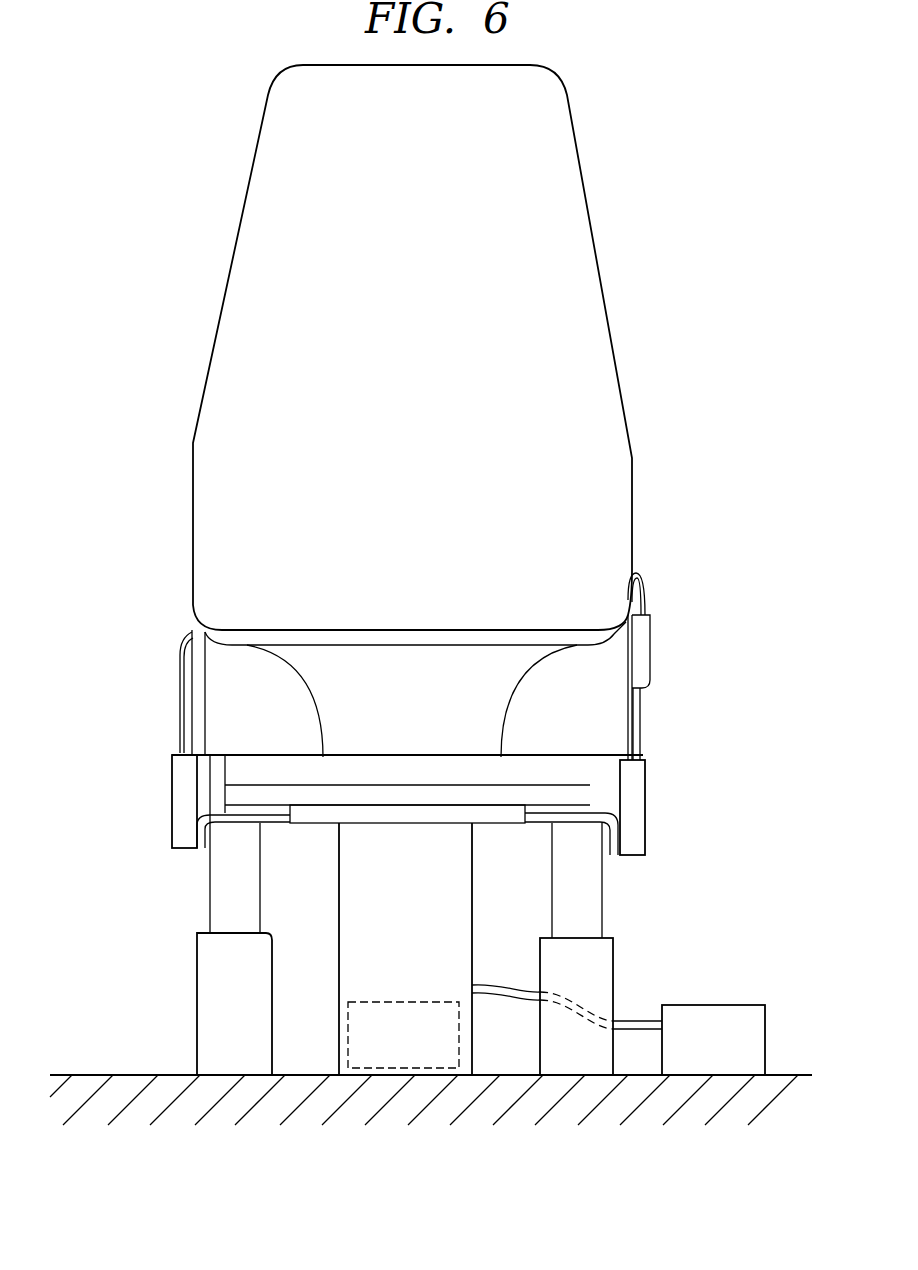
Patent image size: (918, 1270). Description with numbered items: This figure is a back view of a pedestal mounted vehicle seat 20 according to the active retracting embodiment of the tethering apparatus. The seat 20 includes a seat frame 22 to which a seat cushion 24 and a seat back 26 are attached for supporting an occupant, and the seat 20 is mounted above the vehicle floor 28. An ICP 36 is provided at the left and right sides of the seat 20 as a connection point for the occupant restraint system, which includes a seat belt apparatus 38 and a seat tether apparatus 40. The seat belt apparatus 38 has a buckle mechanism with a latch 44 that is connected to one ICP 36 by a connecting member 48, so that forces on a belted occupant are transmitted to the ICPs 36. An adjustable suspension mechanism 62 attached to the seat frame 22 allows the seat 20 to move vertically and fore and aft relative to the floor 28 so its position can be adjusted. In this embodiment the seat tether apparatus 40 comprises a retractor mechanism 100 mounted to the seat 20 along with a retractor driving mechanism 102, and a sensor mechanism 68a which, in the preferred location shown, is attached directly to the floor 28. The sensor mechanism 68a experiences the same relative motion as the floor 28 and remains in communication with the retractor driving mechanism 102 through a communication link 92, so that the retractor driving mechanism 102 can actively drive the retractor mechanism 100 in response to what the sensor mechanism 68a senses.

The vehicle seat 20 is at (190, 347).
The seat frame 22 is at (395, 760).
The seat cushion 24 is at (313, 629).
The seat back 26 is at (250, 187).
The vehicle floor 28 is at (133, 1074).
The ICP 36 is at (170, 797).
The seat belt apparatus 38 is at (707, 752).
The seat tether apparatus 40 is at (128, 895).
The latch 44 is at (650, 645).
The connecting member 48 is at (633, 710).
The adjustable suspension mechanism 62 is at (183, 957).
The sensor mechanism 68a is at (765, 1045).
The communication link 92 is at (633, 1018).
The retractor mechanism 100 is at (428, 898).
The retractor driving mechanism 102 is at (383, 999).